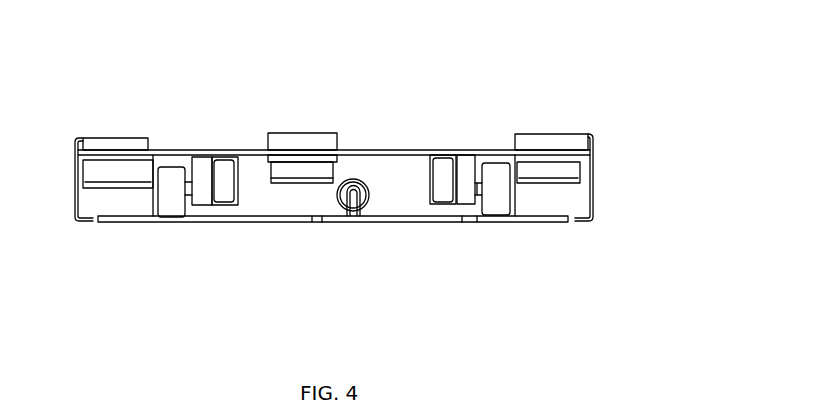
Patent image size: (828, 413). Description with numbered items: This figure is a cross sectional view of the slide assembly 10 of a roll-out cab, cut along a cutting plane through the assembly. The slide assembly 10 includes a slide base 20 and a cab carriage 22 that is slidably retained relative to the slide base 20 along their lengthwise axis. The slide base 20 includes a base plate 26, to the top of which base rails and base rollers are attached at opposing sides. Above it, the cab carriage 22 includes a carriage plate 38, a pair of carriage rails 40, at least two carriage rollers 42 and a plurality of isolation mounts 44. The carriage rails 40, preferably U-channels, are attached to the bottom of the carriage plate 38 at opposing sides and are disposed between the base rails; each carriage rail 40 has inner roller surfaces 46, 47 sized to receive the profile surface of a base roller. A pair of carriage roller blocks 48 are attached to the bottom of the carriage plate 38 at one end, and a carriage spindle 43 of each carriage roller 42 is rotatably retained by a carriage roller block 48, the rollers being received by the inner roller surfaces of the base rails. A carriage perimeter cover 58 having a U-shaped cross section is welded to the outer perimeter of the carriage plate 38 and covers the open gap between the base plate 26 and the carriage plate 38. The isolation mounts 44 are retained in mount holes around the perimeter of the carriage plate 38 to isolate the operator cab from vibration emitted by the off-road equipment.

The slide assembly 10 is at (606, 64).
The slide base 20 is at (223, 233).
The cab carriage 22 is at (424, 101).
The base plate 26 is at (438, 222).
The carriage plate 38 is at (237, 152).
The carriage rails 40 is at (158, 213).
The carriage rollers 42 is at (170, 180).
The carriage spindle 43 is at (482, 220).
The isolation mounts 44 is at (140, 138).
The inner roller surface 46 is at (432, 155).
The inner roller surface 47 is at (447, 201).
The carriage roller blocks 48 is at (203, 173).
The carriage perimeter cover 58 is at (593, 167).